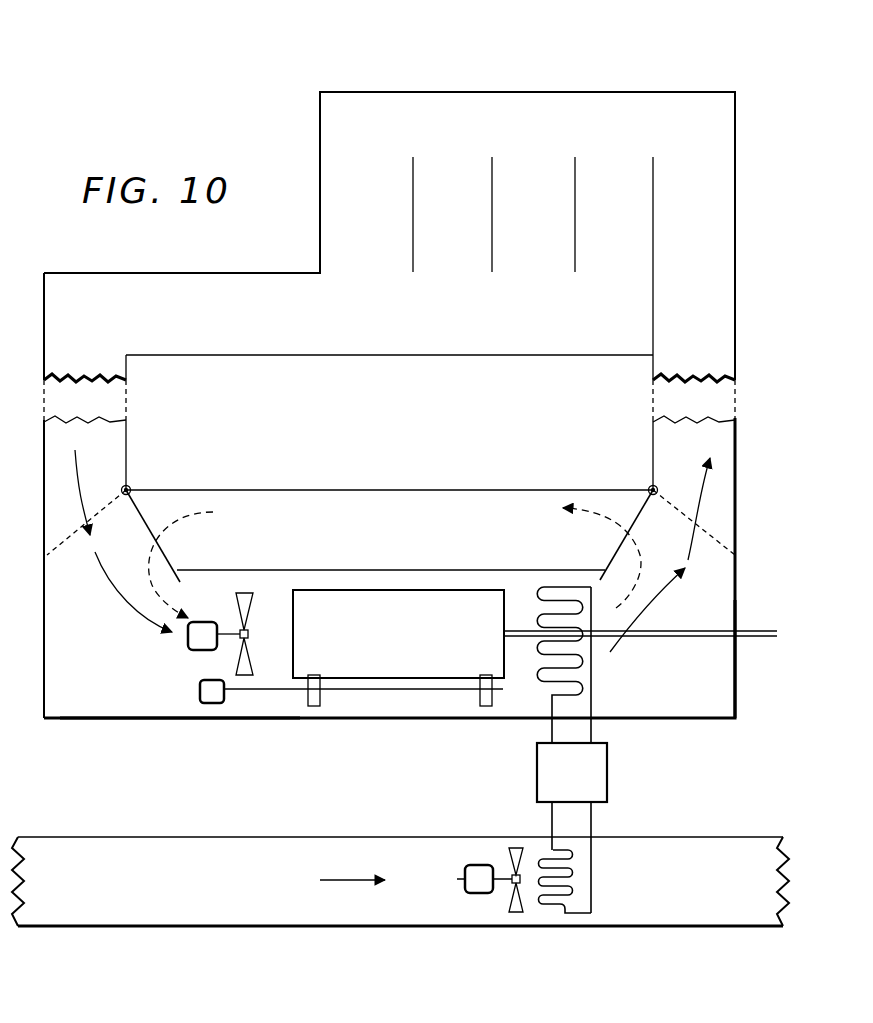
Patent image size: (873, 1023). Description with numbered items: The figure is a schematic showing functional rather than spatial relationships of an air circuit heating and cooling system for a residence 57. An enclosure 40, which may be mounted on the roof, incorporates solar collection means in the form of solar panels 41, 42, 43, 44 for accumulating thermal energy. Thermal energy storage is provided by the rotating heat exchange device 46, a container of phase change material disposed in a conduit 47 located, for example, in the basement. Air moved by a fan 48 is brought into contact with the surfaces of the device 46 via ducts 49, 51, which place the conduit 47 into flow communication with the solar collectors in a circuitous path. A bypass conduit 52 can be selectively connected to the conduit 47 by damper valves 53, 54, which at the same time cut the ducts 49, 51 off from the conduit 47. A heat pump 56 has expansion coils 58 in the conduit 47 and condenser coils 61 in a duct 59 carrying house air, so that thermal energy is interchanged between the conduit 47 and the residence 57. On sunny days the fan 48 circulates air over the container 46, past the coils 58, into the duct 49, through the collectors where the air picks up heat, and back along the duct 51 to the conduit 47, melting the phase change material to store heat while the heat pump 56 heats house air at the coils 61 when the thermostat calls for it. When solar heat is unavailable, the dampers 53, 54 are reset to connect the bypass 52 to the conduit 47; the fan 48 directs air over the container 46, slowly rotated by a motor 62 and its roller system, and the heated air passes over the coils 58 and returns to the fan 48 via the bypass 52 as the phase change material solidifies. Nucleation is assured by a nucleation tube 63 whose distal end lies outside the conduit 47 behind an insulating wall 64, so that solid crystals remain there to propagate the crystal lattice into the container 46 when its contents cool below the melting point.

The enclosure 40 is at (735, 233).
The solar panel 41 is at (345, 214).
The solar panel 42 is at (441, 214).
The solar panel 43 is at (518, 214).
The solar panel 44 is at (598, 214).
The rotating heat exchange device 46 is at (383, 644).
The conduit 47 is at (133, 717).
The fan 48 is at (233, 620).
The duct 49 is at (681, 356).
The duct 51 is at (116, 323).
The bypass conduit 52 is at (485, 524).
The damper valve 53 is at (141, 509).
The damper valve 54 is at (614, 555).
The heat pump 56 is at (607, 773).
The residence 57 is at (222, 836).
The heat pump expansion coils 58 is at (540, 660).
The duct 59 is at (74, 888).
The condenser coils 61 is at (573, 873).
The motor 62 is at (200, 690).
The nucleation tube 63 is at (680, 632).
The insulating wall 64 is at (737, 702).